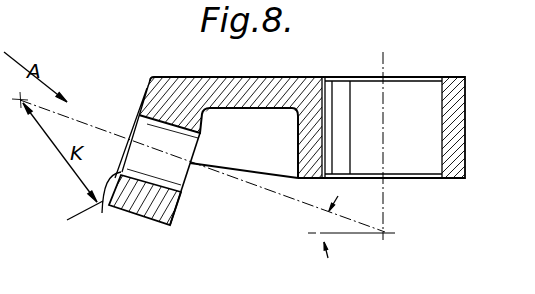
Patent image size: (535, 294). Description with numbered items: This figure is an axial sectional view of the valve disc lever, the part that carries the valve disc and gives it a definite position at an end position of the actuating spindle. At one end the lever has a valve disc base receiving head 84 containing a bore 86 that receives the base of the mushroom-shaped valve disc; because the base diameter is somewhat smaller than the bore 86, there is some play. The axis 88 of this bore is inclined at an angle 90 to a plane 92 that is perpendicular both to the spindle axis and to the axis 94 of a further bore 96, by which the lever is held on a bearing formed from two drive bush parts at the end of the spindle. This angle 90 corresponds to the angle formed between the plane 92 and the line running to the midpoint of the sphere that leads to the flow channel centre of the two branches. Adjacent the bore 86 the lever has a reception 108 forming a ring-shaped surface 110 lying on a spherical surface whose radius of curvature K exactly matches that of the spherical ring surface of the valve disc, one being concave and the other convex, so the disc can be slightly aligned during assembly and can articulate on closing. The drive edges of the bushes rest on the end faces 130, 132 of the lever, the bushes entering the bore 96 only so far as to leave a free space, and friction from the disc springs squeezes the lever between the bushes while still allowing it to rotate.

The valve disc base receiving head 84 is at (138, 216).
The bore 86 is at (185, 184).
The axis 88 is at (256, 187).
The angle 90 is at (320, 222).
The plane 92 is at (355, 235).
The axis 94 is at (378, 65).
The bore 96 is at (353, 98).
The reception 108 is at (146, 111).
The ring-shaped surface 110 is at (100, 206).
The end face 130 is at (428, 87).
The end face 132 is at (453, 181).